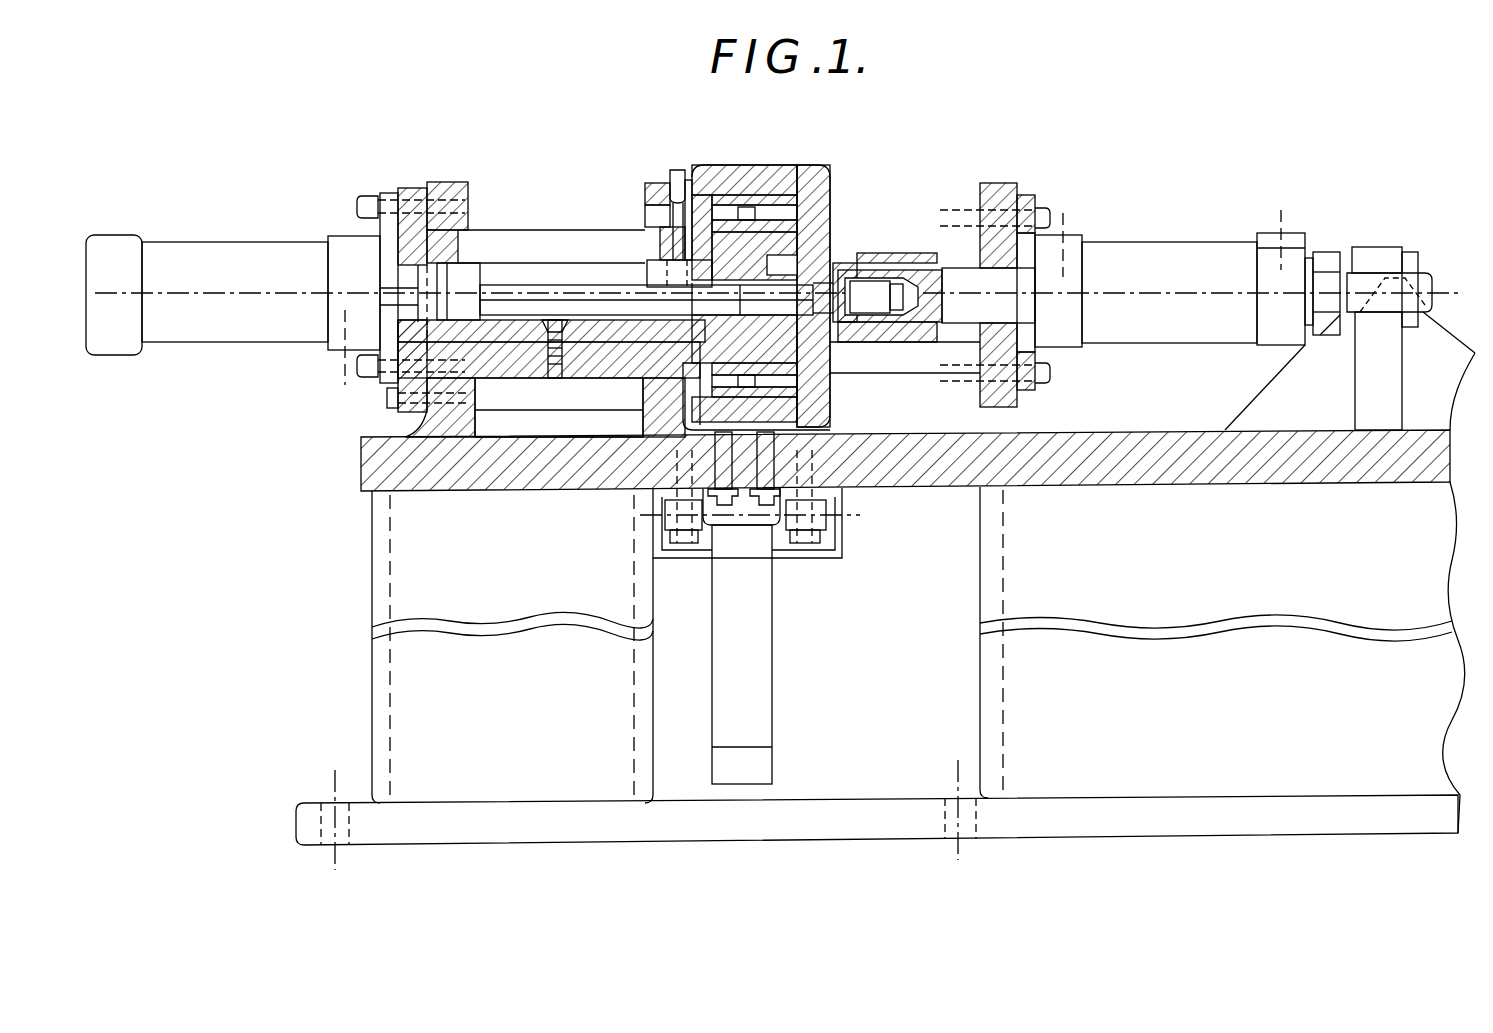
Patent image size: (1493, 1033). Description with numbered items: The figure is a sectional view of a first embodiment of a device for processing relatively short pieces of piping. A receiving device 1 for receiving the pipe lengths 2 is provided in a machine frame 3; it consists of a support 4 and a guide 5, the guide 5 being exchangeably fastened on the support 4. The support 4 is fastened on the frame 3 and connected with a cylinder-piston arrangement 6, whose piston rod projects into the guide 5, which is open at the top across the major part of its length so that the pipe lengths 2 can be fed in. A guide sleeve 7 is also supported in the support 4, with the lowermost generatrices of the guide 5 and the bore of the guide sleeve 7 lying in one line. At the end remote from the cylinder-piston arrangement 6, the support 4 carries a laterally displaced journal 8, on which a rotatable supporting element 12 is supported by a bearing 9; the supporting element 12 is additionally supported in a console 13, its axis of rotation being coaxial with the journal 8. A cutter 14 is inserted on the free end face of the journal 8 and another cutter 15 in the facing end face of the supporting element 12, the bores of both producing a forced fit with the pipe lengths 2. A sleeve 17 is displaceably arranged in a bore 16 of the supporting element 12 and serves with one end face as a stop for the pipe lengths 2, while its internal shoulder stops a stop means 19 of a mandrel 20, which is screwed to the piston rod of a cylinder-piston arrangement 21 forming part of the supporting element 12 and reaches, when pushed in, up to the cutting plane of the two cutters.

The receiving device 1 is at (482, 178).
The pipe lengths 2 is at (515, 285).
The machine frame 3 is at (432, 417).
The support 4 is at (500, 380).
The guide 5 is at (596, 322).
The cylinder-piston arrangement 6 is at (244, 243).
The guide sleeve 7 is at (722, 166).
The journal 8 is at (742, 232).
The bearing 9 is at (778, 208).
The supporting element 12 is at (1068, 212).
The console 13 is at (1377, 247).
The cutter 14 is at (830, 395).
The cutter 15 is at (828, 342).
The bore 16 is at (915, 270).
The sleeve 17 is at (952, 240).
The stop means 19 is at (862, 272).
The mandrel 20 is at (805, 288).
The cylinder-piston arrangement 21 is at (1168, 242).